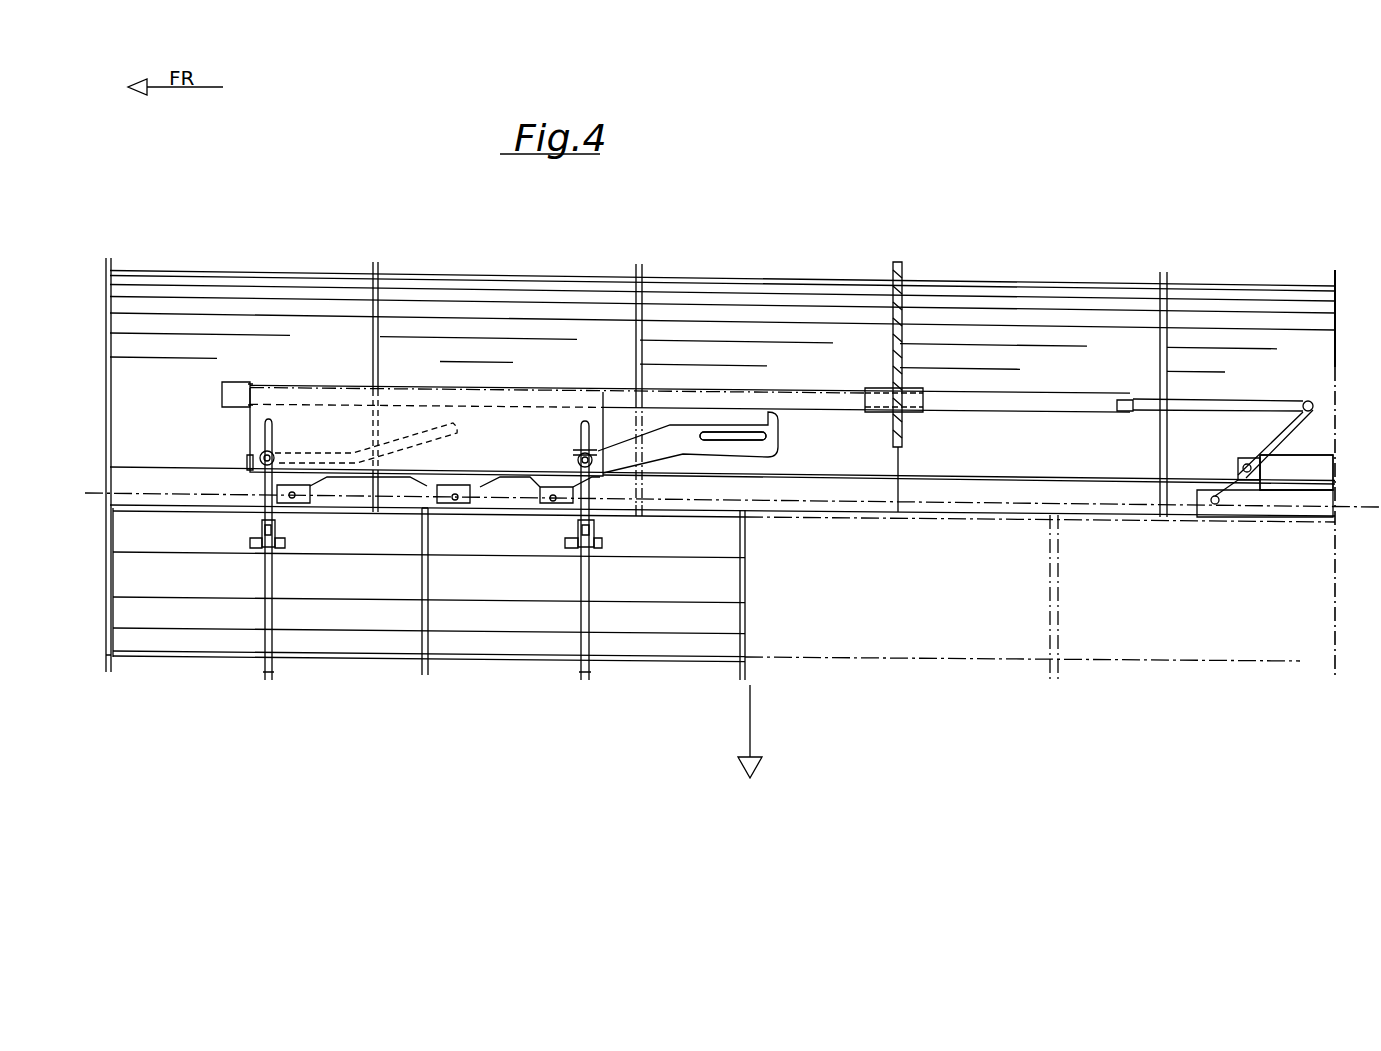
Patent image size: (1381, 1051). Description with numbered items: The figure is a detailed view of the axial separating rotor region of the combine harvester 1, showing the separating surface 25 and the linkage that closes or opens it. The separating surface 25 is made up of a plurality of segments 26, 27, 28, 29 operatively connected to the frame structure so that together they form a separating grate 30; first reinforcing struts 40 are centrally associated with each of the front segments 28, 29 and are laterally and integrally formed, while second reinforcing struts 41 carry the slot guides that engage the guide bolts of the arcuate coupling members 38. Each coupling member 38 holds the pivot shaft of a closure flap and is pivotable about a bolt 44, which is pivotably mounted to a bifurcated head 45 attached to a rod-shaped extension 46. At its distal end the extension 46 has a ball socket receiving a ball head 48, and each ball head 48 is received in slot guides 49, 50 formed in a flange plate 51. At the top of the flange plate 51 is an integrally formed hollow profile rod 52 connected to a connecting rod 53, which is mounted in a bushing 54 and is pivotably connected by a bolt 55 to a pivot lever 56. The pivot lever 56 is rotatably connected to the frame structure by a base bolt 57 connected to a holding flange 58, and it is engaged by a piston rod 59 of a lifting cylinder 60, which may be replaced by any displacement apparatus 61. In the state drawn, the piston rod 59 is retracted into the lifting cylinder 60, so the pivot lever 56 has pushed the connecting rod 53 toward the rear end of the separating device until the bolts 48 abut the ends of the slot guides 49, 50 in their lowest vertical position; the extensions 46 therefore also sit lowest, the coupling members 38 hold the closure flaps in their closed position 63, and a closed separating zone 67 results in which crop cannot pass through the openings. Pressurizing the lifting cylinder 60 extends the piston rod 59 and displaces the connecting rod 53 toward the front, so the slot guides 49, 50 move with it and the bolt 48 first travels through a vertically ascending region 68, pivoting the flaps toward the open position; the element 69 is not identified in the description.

The combine harvester 1 is at (1014, 283).
The separating surface 25 is at (408, 704).
The segment 26 is at (1209, 605).
The segment 27 is at (914, 598).
The front segment 28 is at (674, 602).
The front segment 29 is at (332, 598).
The separating grate 30 is at (92, 507).
The arcuate coupling member 38 is at (268, 675).
The first reinforcing strut 40 is at (112, 677).
The second reinforcing strut 41 is at (276, 665).
The bolt 44 is at (255, 542).
The bifurcated head 45 is at (260, 524).
The rod-shaped extension 46 is at (270, 487).
The ball head 48 is at (260, 458).
The slot guide 49 is at (393, 436).
The slot guide 50 is at (690, 425).
The flange plate 51 is at (247, 453).
The hollow profile rod 52 is at (235, 386).
The connecting rod 53 is at (750, 397).
The bushing 54 is at (910, 397).
The bolt 55 is at (1306, 401).
The pivot lever 56 is at (1265, 433).
The base bolt 57 is at (1212, 497).
The holding flange 58 is at (1258, 492).
The piston rod 59 is at (1258, 470).
The lifting cylinder 60 is at (1288, 462).
The displacement apparatus 61 is at (1296, 472).
The closed position 63 is at (482, 667).
The separating zone 67 is at (750, 720).
The region 68 is at (385, 445).
The slot 69 is at (310, 460).